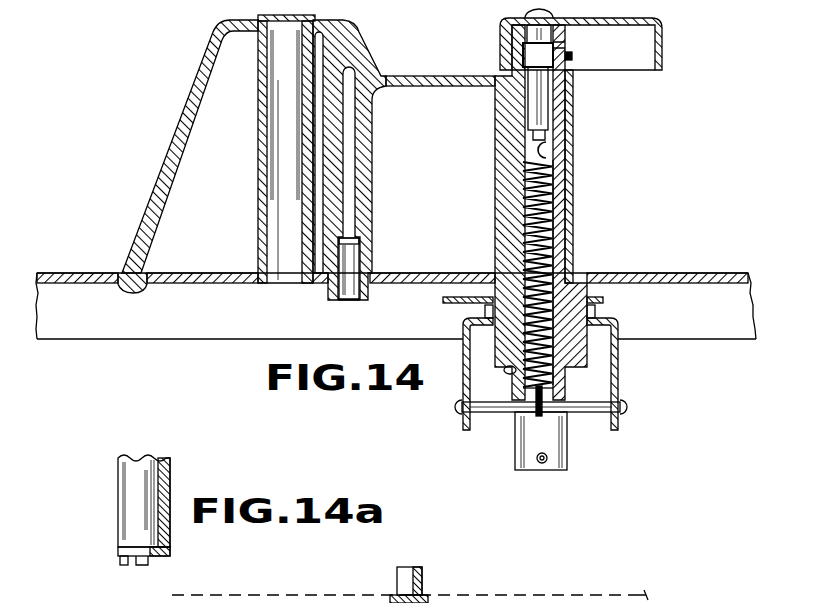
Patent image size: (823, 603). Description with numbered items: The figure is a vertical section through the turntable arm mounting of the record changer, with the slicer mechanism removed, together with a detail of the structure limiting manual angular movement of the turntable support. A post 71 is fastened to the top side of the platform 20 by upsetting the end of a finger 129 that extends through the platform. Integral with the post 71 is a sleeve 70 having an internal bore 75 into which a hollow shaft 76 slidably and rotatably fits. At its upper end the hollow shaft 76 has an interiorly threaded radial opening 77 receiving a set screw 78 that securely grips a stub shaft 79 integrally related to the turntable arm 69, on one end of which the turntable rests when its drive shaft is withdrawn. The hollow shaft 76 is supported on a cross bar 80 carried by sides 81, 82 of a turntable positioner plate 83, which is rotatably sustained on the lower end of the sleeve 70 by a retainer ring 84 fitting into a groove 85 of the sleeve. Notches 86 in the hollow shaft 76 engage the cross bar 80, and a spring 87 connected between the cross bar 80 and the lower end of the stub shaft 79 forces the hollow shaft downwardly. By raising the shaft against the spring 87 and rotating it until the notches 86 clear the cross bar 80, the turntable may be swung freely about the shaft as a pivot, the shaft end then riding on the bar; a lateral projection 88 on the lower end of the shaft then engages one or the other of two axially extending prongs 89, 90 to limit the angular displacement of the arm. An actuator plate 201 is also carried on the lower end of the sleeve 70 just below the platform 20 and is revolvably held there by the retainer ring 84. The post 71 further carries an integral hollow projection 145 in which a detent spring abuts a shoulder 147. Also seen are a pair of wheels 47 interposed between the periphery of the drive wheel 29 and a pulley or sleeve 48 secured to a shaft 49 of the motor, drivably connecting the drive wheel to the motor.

In FIG. 14, the platform 20 is at (742, 309).
In FIG. 14, the arm 69 is at (663, 50).
In FIG. 14, the sleeve 70 is at (573, 118).
In FIG. 14A, the sleeve 70 is at (160, 469).
In FIG. 14, the post 71 is at (427, 88).
In FIG. 14, the internal bore 75 is at (566, 190).
In FIG. 14, the hollow shaft 76 is at (557, 219).
In FIG. 14, the radial opening 77 is at (566, 44).
In FIG. 14, the set screw 78 is at (573, 57).
In FIG. 14, the stub shaft 79 is at (525, 54).
In FIG. 14, the cross bar 80 is at (596, 412).
In FIG. 14, the side 81 is at (462, 427).
In FIG. 14, the side 82 is at (619, 428).
In FIG. 14, the turntable positioner plate 83 is at (483, 311).
In FIG. 14, the retainer ring 84 is at (508, 370).
In FIG. 14, the groove 85 is at (517, 380).
In FIG. 14, the notches 86 is at (518, 456).
In FIG. 14, the spring 87 is at (556, 256).
In FIG. 14, the lateral projection 88 is at (543, 465).
In FIG. 14, the prong 90 is at (565, 393).
In FIG. 14A, the prong 90 is at (143, 566).
In FIG. 14, the finger 129 is at (125, 292).
In FIG. 14, the hollow projection 145 is at (356, 262).
In FIG. 14, the shoulder 147 is at (352, 240).
In FIG. 14, the actuator plate 201 is at (604, 302).
In FIG. 14A, the prong 89 is at (123, 566).
In FIG. 14A, the wheels 47 is at (281, 601).
In FIG. 14A, the pulley or sleeve 48 is at (426, 598).
In FIG. 14A, the shaft 49 is at (421, 573).
In FIG. 14A, the drive wheel 29 is at (649, 596).